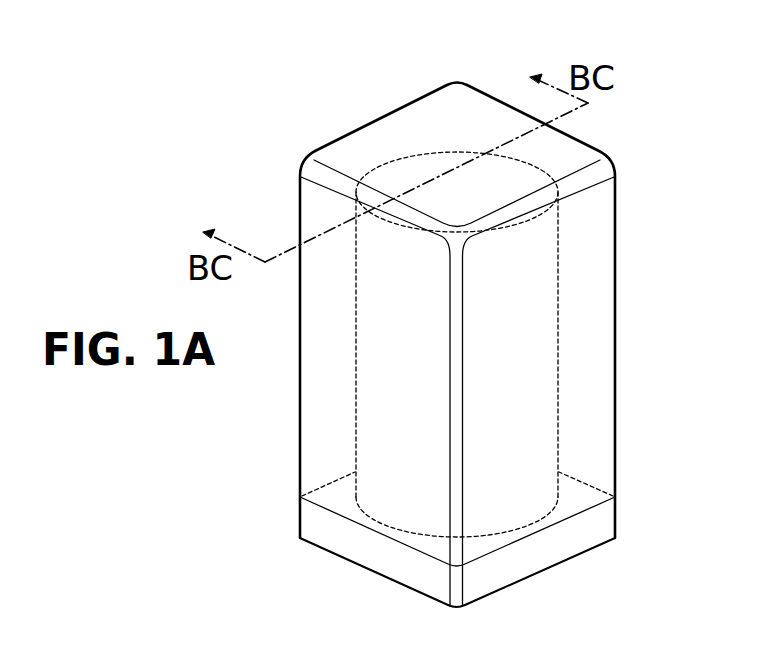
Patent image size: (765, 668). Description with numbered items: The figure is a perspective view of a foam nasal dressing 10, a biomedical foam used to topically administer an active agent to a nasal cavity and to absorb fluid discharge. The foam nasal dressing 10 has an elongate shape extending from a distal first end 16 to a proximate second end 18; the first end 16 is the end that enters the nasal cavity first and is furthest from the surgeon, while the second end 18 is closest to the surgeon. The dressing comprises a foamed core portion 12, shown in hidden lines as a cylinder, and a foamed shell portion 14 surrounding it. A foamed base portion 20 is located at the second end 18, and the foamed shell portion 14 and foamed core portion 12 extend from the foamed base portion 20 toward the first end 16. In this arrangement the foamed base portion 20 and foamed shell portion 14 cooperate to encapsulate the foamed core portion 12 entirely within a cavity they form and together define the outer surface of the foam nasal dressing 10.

The foam nasal dressing 10 is at (383, 96).
The foamed core portion 12 is at (535, 245).
The foamed shell portion 14 is at (590, 348).
The first end 16 is at (488, 138).
The second end 18 is at (580, 577).
The foamed base portion 20 is at (490, 597).